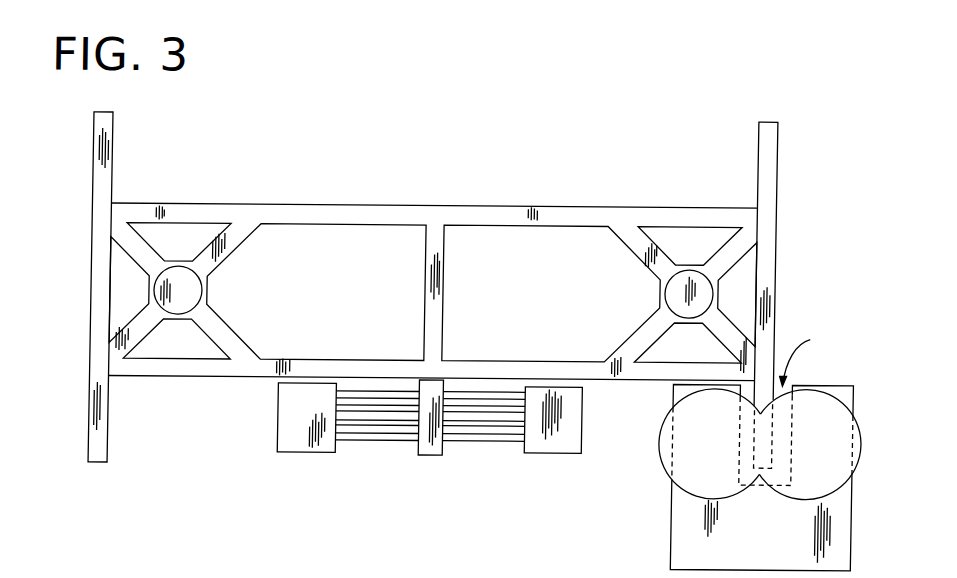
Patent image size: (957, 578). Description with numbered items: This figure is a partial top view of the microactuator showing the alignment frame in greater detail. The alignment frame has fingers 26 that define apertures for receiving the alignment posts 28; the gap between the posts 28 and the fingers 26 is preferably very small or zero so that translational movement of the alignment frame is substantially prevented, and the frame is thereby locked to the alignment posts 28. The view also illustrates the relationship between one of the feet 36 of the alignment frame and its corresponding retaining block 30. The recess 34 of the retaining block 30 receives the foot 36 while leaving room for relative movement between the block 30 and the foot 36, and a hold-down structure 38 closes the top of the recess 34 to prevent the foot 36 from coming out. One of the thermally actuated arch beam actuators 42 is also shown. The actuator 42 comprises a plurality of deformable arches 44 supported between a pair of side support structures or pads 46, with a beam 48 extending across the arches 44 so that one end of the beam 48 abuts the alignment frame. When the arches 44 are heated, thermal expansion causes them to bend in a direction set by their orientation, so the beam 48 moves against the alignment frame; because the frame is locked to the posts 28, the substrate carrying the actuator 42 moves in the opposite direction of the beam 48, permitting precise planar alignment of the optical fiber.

The fingers 26 is at (153, 268).
The alignment posts 28 is at (207, 287).
The retaining block 30 is at (862, 504).
The recess 34 is at (817, 356).
The foot 36 is at (97, 160).
The hold-down structure 38 is at (869, 424).
The arch beam actuator 42 is at (410, 460).
The arches 44 is at (370, 441).
The side support structures or pads 46 is at (298, 452).
The beam 48 is at (441, 453).